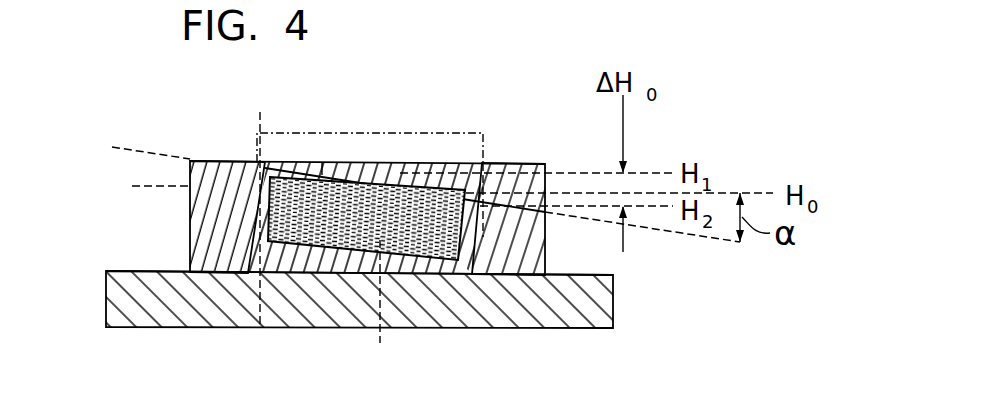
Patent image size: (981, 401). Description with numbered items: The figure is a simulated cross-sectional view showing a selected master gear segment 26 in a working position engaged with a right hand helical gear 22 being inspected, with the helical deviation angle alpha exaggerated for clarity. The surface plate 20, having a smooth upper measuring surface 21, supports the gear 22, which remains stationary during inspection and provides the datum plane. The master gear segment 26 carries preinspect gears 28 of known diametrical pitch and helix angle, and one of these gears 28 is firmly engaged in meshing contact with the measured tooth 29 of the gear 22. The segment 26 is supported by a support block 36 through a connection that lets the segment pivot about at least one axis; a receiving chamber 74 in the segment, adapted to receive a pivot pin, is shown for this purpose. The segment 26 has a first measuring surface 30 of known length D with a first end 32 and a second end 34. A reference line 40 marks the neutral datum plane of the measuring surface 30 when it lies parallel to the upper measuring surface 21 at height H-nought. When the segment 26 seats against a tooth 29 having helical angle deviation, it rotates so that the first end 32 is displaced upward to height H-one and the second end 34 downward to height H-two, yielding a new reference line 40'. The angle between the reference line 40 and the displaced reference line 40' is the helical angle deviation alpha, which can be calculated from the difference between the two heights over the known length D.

The surface plate 20 is at (187, 320).
The upper measuring surface 21 is at (145, 271).
The right hand helical gear 22 is at (238, 161).
The master gear segment 26 is at (430, 273).
The preinspect gears 28 is at (483, 188).
The tooth 29 is at (360, 162).
The first measuring surface 30 is at (322, 162).
The first end 32 is at (260, 112).
The second end 34 is at (498, 177).
The support block 36 is at (446, 133).
The reference line 40 is at (619, 159).
The displaced reference line 40' is at (642, 249).
The receiving chamber 74 is at (380, 345).